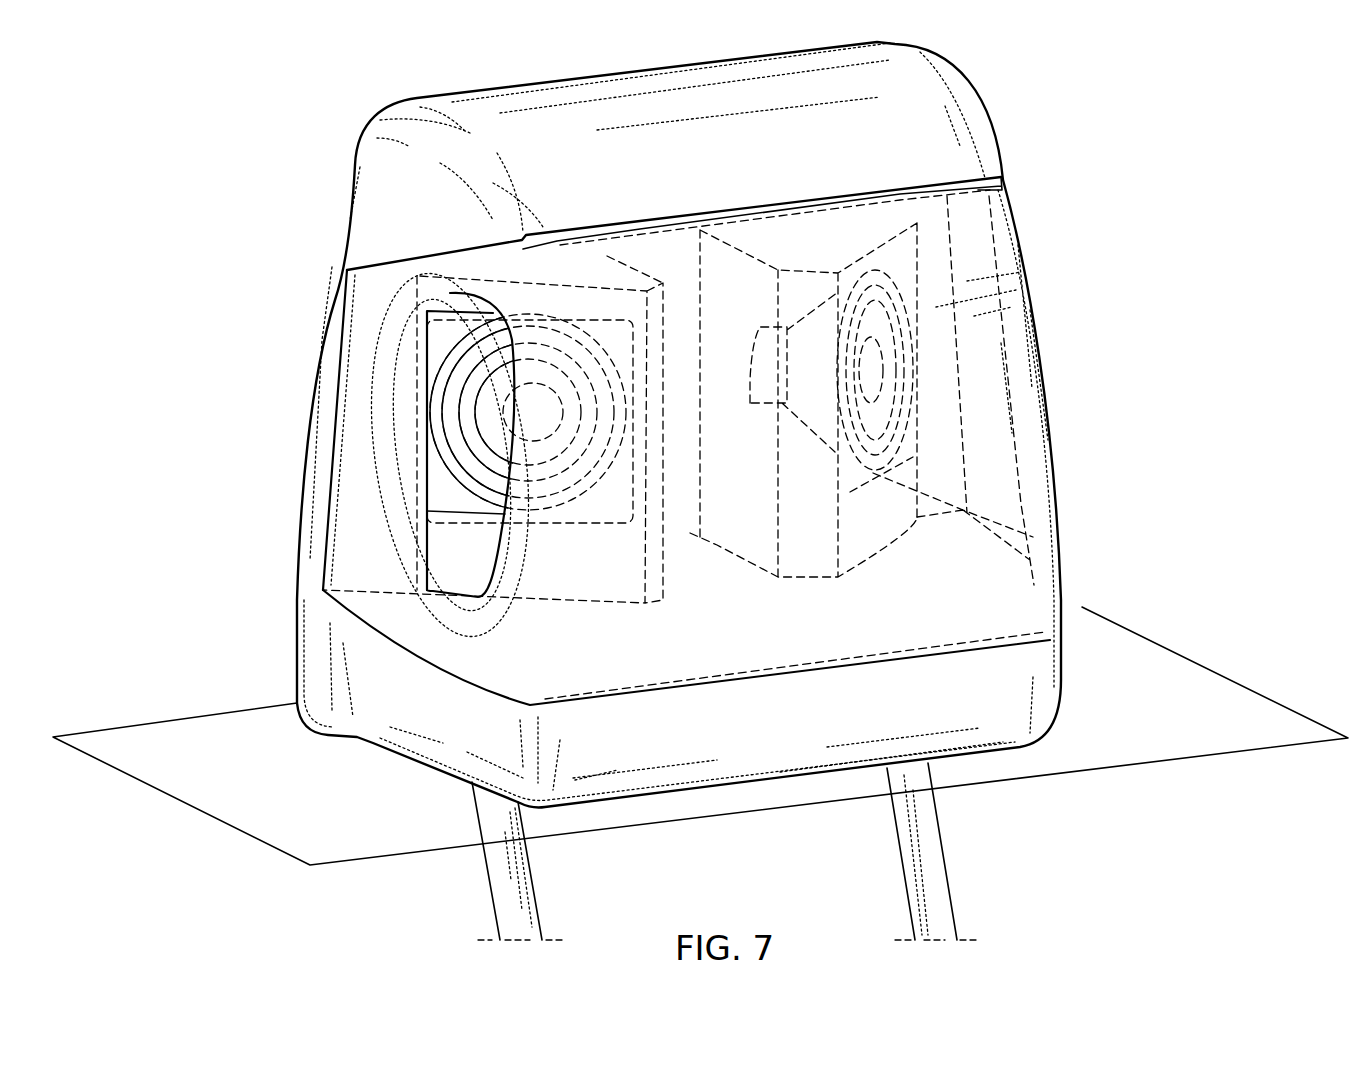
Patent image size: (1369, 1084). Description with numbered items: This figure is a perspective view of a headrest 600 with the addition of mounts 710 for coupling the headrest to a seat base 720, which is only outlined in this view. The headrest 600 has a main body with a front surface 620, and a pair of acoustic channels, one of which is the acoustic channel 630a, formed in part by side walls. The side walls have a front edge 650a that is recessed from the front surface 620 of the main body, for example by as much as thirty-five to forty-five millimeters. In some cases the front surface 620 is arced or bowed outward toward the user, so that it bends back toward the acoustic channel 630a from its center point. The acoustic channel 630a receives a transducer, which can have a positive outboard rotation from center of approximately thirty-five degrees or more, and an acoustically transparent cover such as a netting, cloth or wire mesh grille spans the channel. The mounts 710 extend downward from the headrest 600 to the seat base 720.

The headrest 600 is at (674, 425).
The front surface 620 is at (722, 453).
The acoustic channel 630a is at (453, 444).
The front edge 650a is at (404, 498).
The mounts 710 is at (470, 816).
The seat base 720 is at (335, 830).